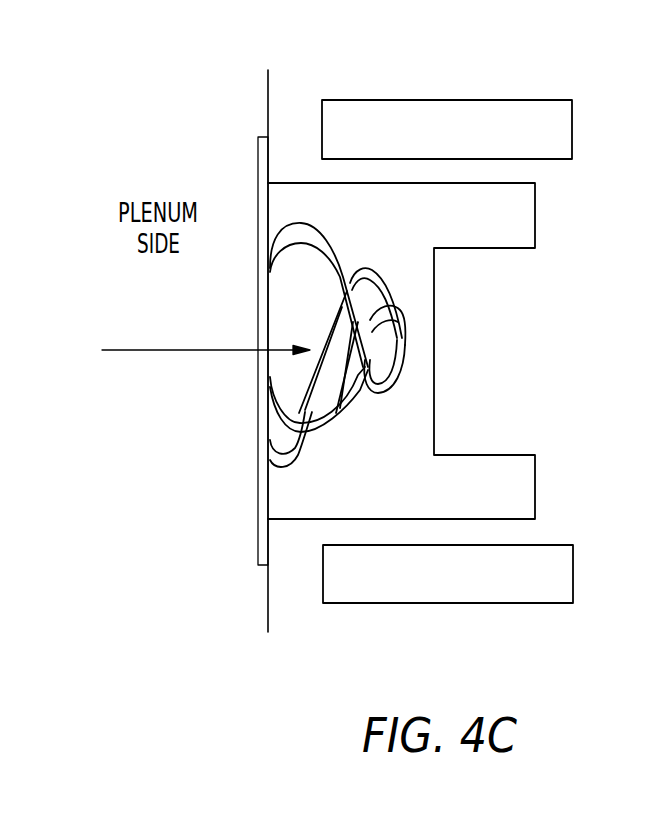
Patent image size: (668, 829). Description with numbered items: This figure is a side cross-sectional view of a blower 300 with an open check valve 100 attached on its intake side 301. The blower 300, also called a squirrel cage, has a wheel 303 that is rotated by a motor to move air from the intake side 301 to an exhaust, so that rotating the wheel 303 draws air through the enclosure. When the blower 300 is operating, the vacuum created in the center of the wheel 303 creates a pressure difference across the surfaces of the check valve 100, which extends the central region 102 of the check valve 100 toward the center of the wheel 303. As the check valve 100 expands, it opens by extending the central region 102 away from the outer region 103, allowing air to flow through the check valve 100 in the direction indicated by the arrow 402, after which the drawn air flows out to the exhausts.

The blower 300 is at (581, 57).
The check valve 100 is at (266, 128).
The outer region 103 is at (257, 167).
The wheel 303 is at (447, 100).
The central region 102 is at (405, 343).
The intake side 301 is at (298, 380).
The arrow 402 is at (147, 348).